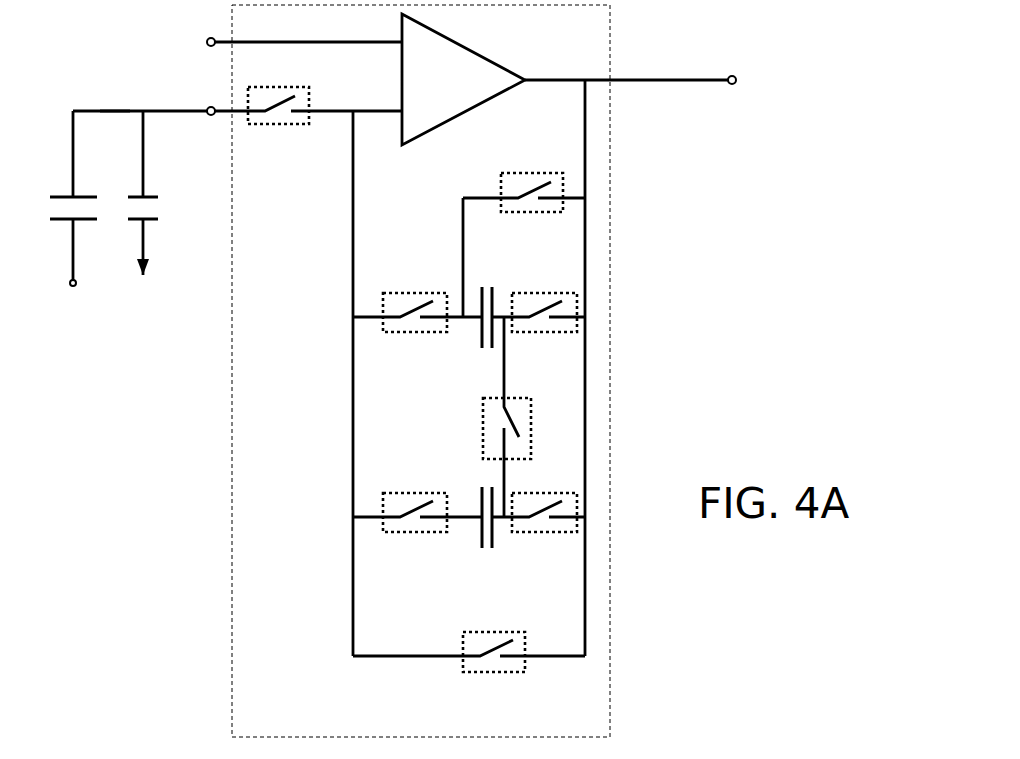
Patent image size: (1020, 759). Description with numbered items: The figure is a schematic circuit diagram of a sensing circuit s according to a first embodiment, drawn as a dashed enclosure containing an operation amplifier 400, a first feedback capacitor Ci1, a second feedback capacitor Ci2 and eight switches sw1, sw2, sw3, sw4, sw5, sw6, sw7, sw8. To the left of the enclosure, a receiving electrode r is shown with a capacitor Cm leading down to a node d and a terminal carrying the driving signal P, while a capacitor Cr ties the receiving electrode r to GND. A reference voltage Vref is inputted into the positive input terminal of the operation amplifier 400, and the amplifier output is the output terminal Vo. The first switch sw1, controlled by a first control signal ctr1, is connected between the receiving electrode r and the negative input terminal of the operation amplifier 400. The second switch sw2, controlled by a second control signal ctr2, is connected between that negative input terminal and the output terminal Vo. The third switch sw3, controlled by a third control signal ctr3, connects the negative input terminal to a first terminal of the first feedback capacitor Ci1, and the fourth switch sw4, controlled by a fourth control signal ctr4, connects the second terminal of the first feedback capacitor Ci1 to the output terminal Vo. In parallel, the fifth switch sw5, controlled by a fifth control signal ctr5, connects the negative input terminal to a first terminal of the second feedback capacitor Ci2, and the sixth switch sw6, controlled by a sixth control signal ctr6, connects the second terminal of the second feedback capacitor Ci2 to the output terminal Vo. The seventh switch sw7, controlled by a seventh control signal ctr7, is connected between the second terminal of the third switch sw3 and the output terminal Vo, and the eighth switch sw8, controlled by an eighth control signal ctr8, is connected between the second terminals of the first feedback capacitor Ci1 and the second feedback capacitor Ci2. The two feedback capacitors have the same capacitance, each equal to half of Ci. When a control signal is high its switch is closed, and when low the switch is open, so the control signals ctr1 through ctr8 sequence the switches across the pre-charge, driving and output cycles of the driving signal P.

The operation amplifier 400 is at (485, 55).
The sensing circuit s is at (240, 551).
The receiving electrode r is at (93, 109).
The node d is at (70, 238).
The driving signal P is at (71, 318).
The capacitor Cm is at (85, 225).
The capacitor Cr is at (156, 236).
The ground GND is at (148, 298).
The reference voltage Vref is at (194, 20).
The output terminal Vo is at (736, 53).
The first feedback capacitor Ci1 is at (480, 331).
The second feedback capacitor Ci2 is at (485, 534).
The first switch sw1 is at (283, 87).
The second switch sw2 is at (498, 638).
The third switch sw3 is at (392, 296).
The fourth switch sw4 is at (521, 296).
The fifth switch sw5 is at (418, 496).
The sixth switch sw6 is at (528, 496).
The seventh switch sw7 is at (509, 184).
The eighth switch sw8 is at (533, 447).
The first control signal ctr1 is at (278, 124).
The second control signal ctr2 is at (494, 672).
The third control signal ctr3 is at (415, 332).
The fourth control signal ctr4 is at (543, 332).
The fifth control signal ctr5 is at (415, 532).
The sixth control signal ctr6 is at (543, 532).
The seventh control signal ctr7 is at (532, 173).
The eighth control signal ctr8 is at (483, 431).